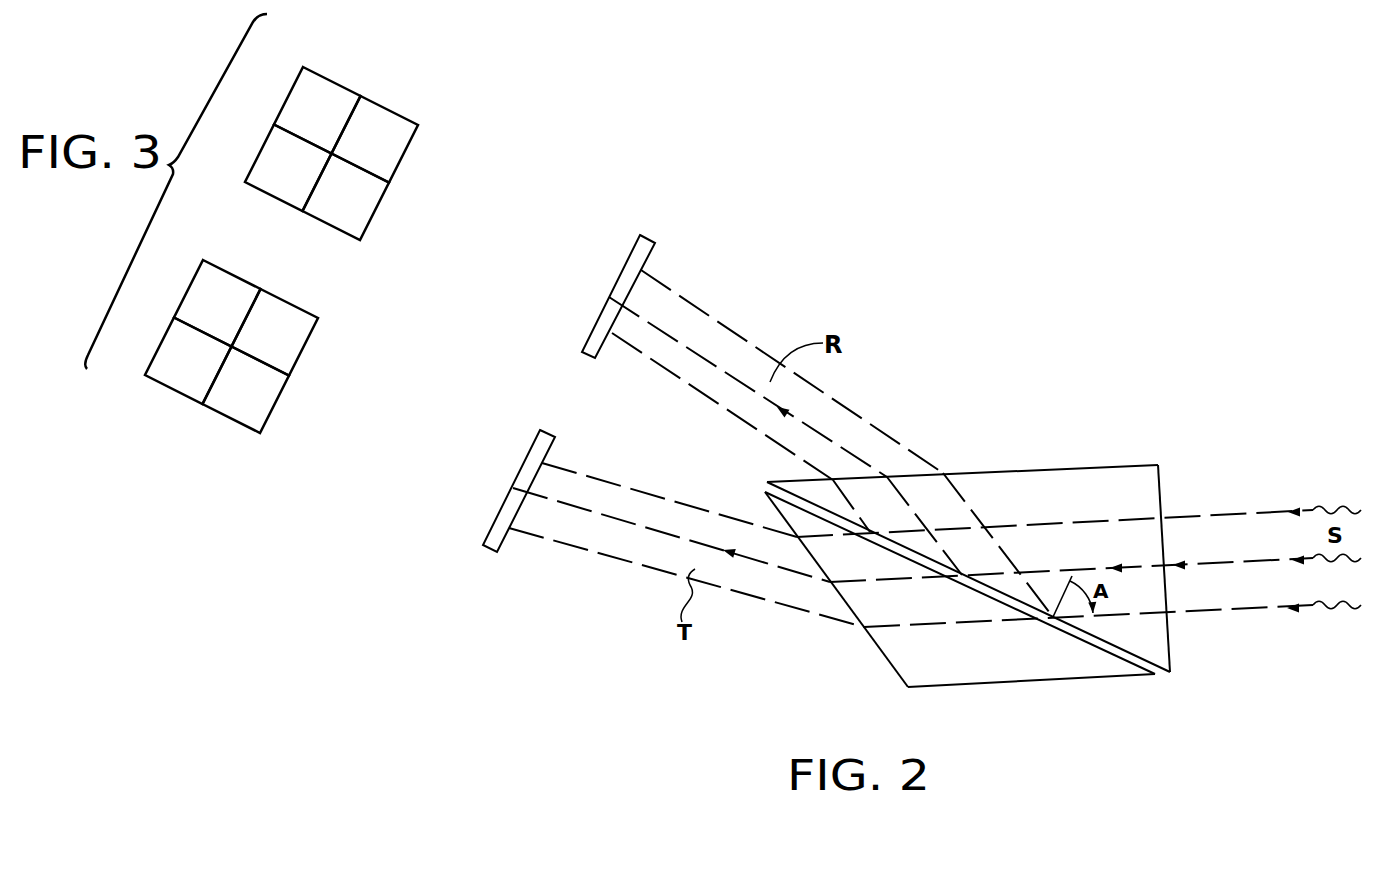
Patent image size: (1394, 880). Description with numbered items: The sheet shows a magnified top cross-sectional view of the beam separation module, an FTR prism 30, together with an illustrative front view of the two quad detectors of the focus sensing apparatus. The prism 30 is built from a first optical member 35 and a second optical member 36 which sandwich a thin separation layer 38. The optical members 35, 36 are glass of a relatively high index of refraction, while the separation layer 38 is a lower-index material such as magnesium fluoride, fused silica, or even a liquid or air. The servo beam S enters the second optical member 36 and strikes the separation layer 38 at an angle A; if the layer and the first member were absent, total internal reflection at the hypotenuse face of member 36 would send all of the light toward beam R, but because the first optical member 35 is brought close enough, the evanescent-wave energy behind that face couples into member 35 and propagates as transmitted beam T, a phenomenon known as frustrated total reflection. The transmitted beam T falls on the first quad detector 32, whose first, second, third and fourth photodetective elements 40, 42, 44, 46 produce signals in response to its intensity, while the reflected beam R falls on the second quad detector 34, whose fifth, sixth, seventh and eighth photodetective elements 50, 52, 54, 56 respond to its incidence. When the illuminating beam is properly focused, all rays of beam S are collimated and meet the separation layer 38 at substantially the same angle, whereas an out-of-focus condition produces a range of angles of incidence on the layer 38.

In FIG. 2, the FTR prism 30 is at (995, 555).
In FIG. 2, the first quad detector 32 is at (488, 553).
In FIG. 3, the first quad detector 32 is at (246, 338).
In FIG. 2, the second quad detector 34 is at (652, 241).
In FIG. 3, the second quad detector 34 is at (361, 145).
In FIG. 2, the first optical member 35 is at (1015, 673).
In FIG. 2, the second optical member 36 is at (1076, 472).
In FIG. 2, the separation layer 38 is at (1117, 653).
In FIG. 3, the first photodetective element 40 is at (260, 424).
In FIG. 3, the second photodetective element 42 is at (167, 352).
In FIG. 3, the third photodetective element 44 is at (295, 310).
In FIG. 3, the fourth photodetective element 46 is at (220, 277).
In FIG. 3, the fifth photodetective element 50 is at (382, 115).
In FIG. 3, the sixth photodetective element 52 is at (325, 80).
In FIG. 3, the seventh photodetective element 54 is at (372, 205).
In FIG. 3, the eighth photodetective element 56 is at (263, 157).